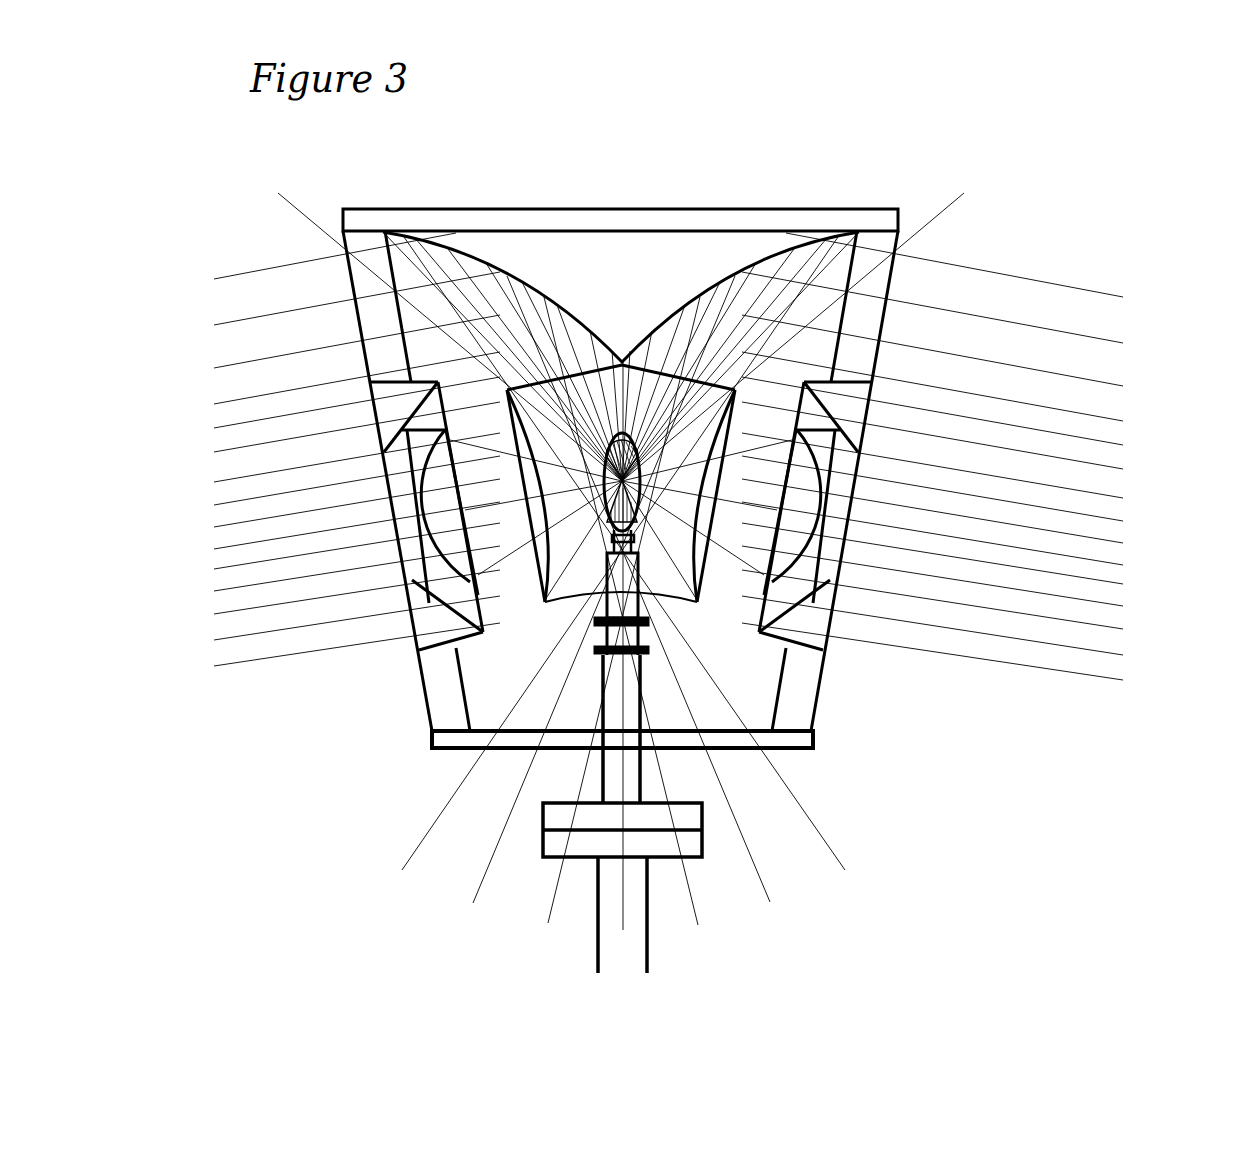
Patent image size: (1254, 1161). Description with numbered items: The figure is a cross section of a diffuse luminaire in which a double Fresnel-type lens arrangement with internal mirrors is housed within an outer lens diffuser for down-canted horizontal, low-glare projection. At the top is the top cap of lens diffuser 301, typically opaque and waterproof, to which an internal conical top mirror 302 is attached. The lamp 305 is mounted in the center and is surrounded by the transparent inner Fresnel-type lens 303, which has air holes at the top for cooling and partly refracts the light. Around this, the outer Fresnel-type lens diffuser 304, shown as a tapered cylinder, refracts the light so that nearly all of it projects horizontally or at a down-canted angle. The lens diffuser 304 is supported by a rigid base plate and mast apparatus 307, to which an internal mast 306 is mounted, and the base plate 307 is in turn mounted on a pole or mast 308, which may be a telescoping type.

The top cap of lens diffuser 301 is at (690, 216).
The conical top mirror 302 is at (658, 281).
The inner Fresnel-type lens 303 is at (732, 459).
The outer Fresnel-type lens diffuser 304 is at (838, 476).
The lamp 305 is at (652, 482).
The internal mast 306 is at (638, 609).
The base plate and mast apparatus 307 is at (636, 772).
The pole or mast 308 is at (621, 911).